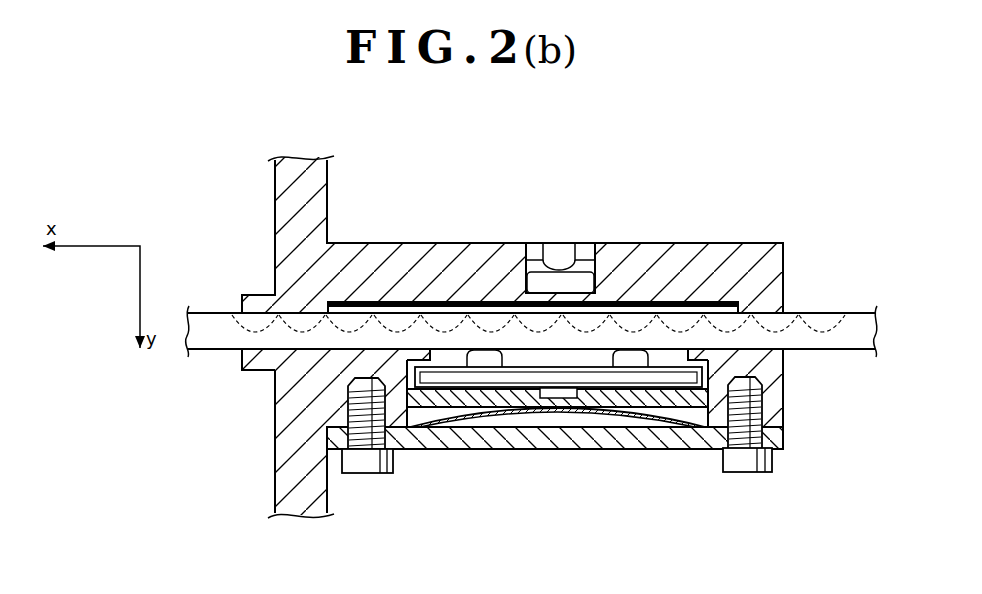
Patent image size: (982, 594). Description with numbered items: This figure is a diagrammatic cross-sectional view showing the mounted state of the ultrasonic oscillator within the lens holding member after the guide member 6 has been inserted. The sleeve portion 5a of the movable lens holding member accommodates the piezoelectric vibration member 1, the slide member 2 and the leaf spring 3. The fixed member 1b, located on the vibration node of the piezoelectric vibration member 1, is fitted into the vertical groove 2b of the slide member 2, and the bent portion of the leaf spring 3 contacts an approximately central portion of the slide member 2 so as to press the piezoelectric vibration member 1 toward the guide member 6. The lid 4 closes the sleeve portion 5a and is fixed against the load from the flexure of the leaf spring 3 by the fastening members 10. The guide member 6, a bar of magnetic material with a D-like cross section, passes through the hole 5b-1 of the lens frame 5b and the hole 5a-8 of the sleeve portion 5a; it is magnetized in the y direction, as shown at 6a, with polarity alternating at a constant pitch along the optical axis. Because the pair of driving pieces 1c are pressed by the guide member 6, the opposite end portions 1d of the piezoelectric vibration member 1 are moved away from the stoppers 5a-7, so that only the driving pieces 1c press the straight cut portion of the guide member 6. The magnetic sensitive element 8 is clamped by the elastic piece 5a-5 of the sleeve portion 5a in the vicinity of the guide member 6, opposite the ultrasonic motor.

The piezoelectric vibration member 1 is at (650, 400).
The fixed member 1b is at (592, 388).
The driving pieces 1c is at (482, 345).
The opposite end portions 1d is at (410, 405).
The slide member 2 is at (536, 420).
The vertical groove 2b is at (560, 400).
The leaf spring 3 is at (498, 432).
The lid 4 is at (457, 440).
The sleeve portion 5a is at (678, 270).
The elastic piece 5a-5 is at (560, 245).
The stoppers 5a-7 is at (416, 342).
The hole 5a-8 is at (760, 342).
The lens frame 5b is at (280, 450).
The hole 5b-1 is at (250, 366).
The guide member 6 is at (212, 335).
The magnetization 6a is at (839, 313).
The magnetic sensitive element 8 is at (590, 286).
The fastening members 10 is at (362, 465).